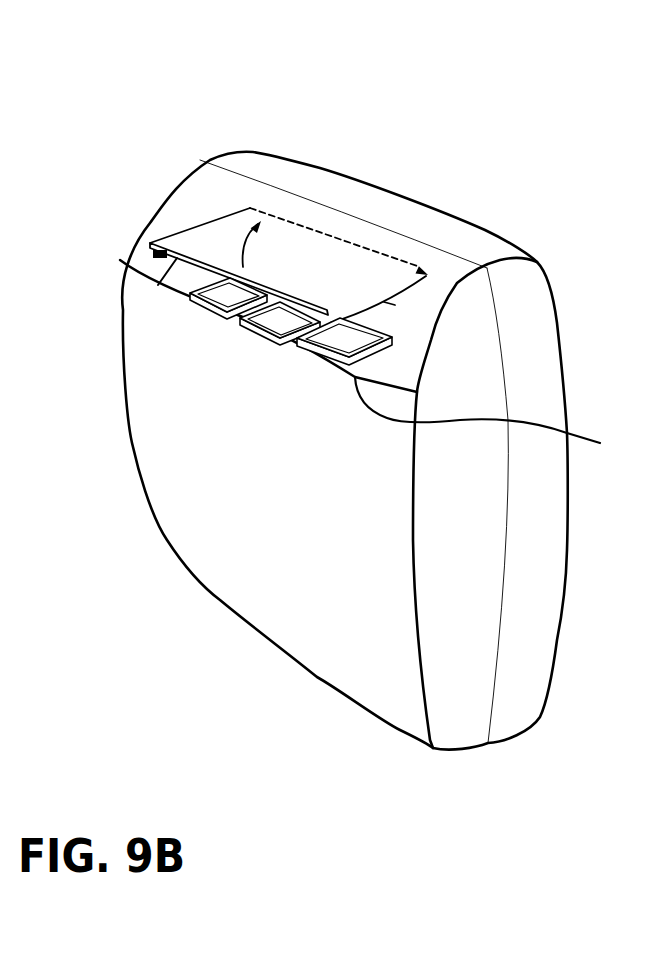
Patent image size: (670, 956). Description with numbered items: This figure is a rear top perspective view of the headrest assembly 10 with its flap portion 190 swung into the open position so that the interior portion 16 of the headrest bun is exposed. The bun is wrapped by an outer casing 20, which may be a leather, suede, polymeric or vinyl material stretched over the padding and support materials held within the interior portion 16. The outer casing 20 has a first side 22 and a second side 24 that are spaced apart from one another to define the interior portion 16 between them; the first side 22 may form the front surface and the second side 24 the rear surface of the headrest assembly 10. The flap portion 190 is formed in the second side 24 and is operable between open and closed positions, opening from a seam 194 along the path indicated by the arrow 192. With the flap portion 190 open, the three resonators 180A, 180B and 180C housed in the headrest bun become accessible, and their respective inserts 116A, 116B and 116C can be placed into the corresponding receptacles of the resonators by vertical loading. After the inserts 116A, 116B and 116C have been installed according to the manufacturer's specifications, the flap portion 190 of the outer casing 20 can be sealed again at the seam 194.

The headrest assembly 10 is at (382, 143).
The interior portion 16 is at (330, 313).
The outer casing 20 is at (523, 673).
The first side 22 is at (570, 507).
The second side 24 is at (353, 647).
The insert 116A is at (333, 337).
The insert 116B is at (272, 315).
The insert 116C is at (223, 293).
The resonator 180A is at (328, 368).
The resonator 180B is at (270, 350).
The resonator 180C is at (175, 302).
The flap portion 190 is at (290, 253).
The arrow 192 is at (243, 246).
The seam 194 is at (500, 421).